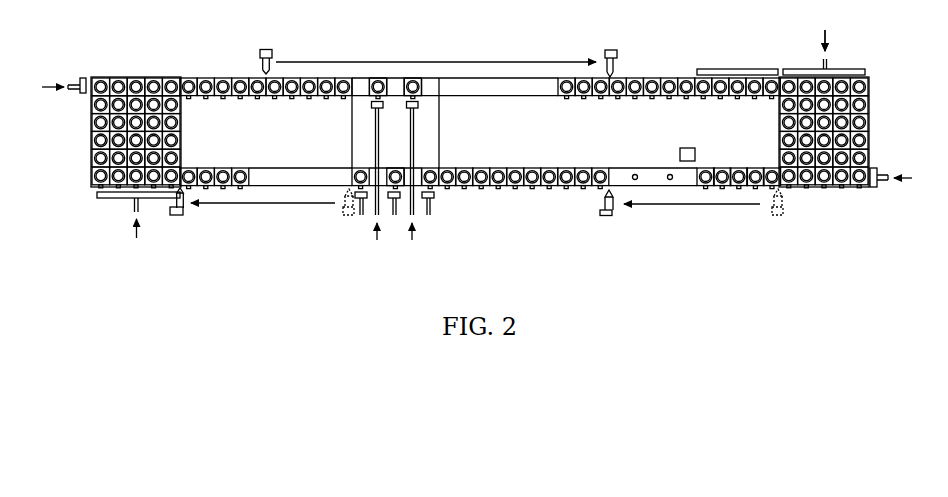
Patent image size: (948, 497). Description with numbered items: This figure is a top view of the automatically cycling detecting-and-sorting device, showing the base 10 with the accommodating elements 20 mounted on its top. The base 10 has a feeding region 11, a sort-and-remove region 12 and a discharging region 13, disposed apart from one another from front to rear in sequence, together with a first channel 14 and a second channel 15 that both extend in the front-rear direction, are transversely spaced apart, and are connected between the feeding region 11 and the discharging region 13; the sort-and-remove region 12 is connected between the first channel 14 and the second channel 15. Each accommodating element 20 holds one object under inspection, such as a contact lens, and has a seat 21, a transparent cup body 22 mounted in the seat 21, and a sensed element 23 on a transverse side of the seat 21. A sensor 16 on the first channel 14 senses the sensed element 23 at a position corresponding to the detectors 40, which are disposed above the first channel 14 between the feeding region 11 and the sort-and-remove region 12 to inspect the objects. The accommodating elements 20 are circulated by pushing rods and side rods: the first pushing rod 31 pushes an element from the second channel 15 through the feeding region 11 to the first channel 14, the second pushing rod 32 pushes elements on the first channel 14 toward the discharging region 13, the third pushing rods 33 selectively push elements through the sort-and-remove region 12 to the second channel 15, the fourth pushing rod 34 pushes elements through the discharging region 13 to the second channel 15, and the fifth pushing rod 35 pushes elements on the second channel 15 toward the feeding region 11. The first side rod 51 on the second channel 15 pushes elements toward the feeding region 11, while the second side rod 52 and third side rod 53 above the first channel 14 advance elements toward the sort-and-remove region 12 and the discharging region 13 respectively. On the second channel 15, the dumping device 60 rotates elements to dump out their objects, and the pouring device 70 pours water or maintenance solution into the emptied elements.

The base 10 is at (835, 54).
The feeding region 11 is at (874, 113).
The sort-and-remove region 12 is at (446, 127).
The discharging region 13 is at (85, 130).
The first channel 14 is at (505, 198).
The second channel 15 is at (182, 67).
The sensor 16 is at (690, 148).
The accommodating element 20 is at (512, 157).
The seat 21 is at (540, 170).
The cup body 22 is at (549, 182).
The sensed element 23 is at (566, 190).
The first pushing rod 31 is at (862, 69).
The second pushing rod 32 is at (873, 189).
The third pushing rods 33 is at (436, 195).
The fourth pushing rod 34 is at (107, 198).
The fifth pushing rod 35 is at (85, 79).
The detectors 40 is at (635, 173).
The first side rod 51 is at (605, 53).
The second side rod 52 is at (604, 211).
The third side rod 53 is at (175, 212).
The dumping device 60 is at (654, 73).
The pouring device 70 is at (752, 69).